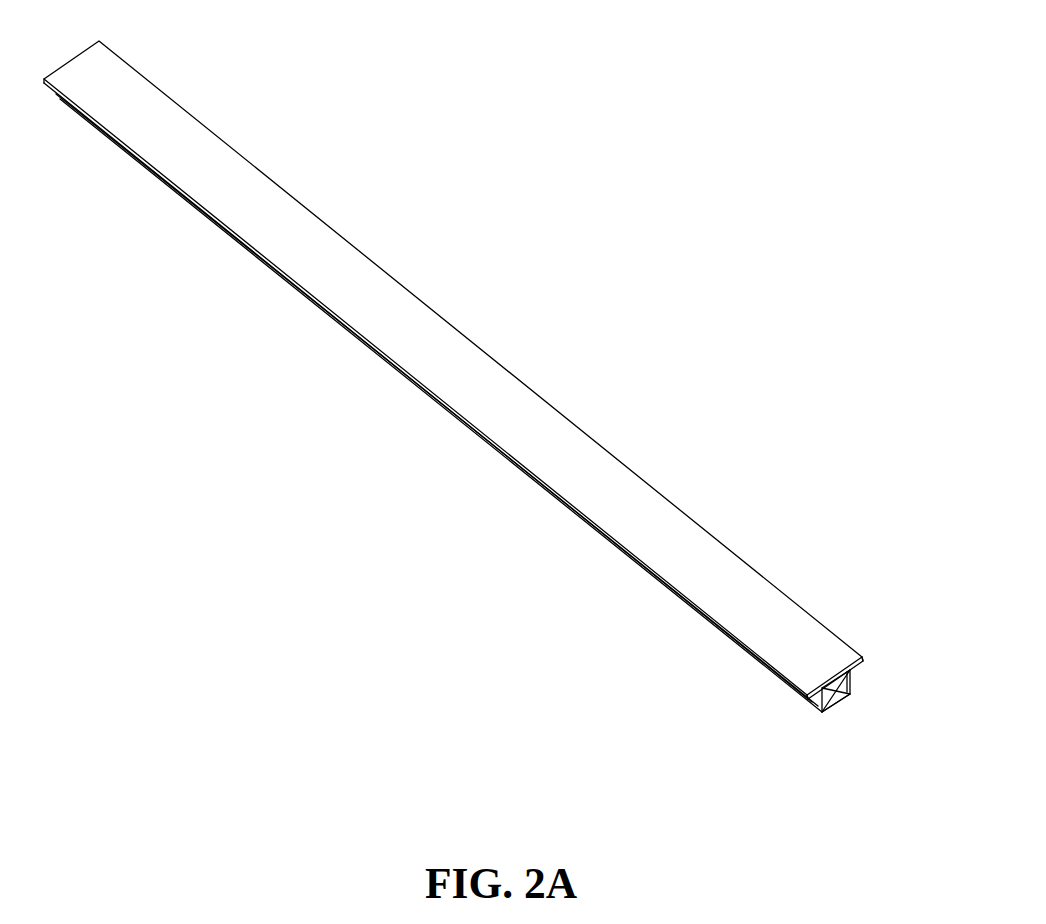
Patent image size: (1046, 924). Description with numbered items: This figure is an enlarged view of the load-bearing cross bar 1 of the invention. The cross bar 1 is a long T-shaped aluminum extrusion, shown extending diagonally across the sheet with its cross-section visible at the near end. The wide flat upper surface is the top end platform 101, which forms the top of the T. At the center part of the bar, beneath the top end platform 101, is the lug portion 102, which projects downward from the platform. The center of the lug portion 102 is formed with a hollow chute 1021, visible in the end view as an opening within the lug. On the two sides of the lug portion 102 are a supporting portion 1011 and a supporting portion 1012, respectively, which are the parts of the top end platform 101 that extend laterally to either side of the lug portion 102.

The load-bearing cross bar 1 is at (455, 290).
The top end platform 101 is at (720, 592).
The supporting portion 1011 is at (812, 702).
The supporting portion 1012 is at (863, 659).
The lug portion 102 is at (853, 683).
The hollow chute 1021 is at (838, 706).